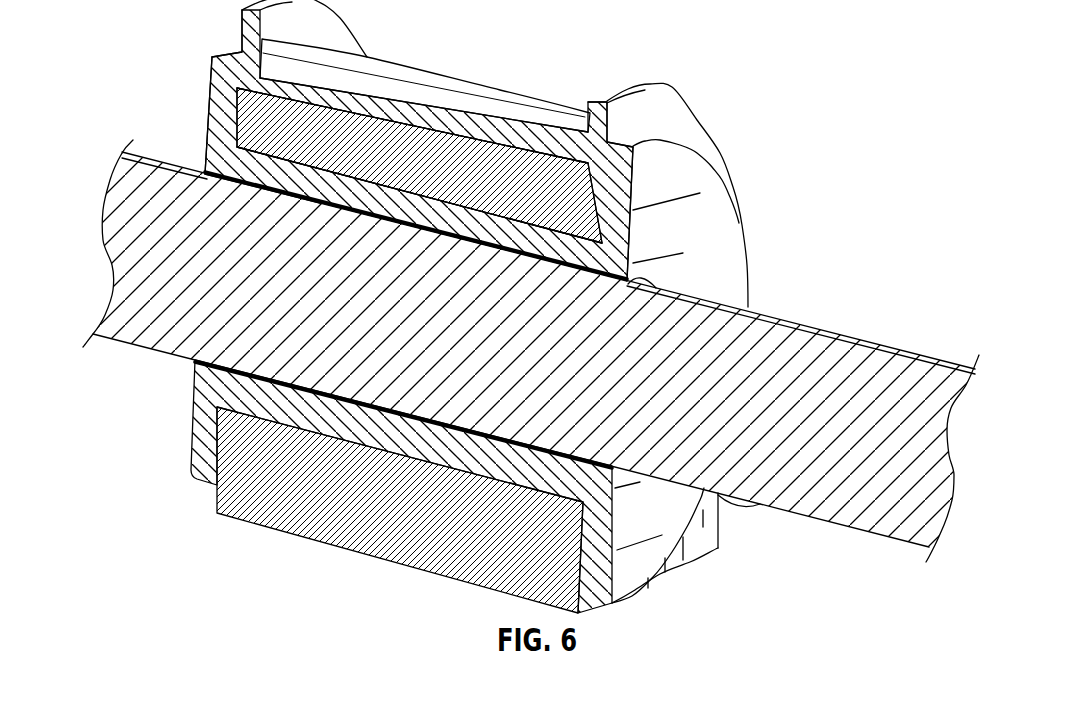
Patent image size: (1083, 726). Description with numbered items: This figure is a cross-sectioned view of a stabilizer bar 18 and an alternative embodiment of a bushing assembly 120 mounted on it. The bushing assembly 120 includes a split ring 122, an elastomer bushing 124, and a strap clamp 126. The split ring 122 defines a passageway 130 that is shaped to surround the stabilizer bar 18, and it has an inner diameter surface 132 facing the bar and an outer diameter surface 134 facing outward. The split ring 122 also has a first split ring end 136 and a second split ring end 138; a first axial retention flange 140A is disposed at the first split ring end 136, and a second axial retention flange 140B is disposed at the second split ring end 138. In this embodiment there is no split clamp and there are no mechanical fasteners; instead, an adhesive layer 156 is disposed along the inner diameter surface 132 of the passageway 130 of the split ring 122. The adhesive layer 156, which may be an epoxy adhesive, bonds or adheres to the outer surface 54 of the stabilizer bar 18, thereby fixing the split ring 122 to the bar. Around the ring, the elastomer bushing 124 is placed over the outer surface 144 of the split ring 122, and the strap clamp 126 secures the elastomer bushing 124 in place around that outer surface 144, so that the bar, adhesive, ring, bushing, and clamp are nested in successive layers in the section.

The stabilizer bar 18 is at (808, 345).
The outer surface 54 is at (898, 347).
The bushing assembly 120 is at (514, 306).
The split ring 122 is at (485, 306).
The elastomer bushing 124 is at (722, 153).
The strap clamp 126 is at (450, 77).
The passageway 130 is at (232, 186).
The inner diameter surface 132 is at (270, 195).
The outer diameter surface 134 is at (431, 192).
The first split ring end 136 is at (677, 147).
The second split ring end 138 is at (212, 57).
The first axial retention flange 140A is at (732, 255).
The second axial retention flange 140B is at (212, 98).
The outer surface 144 is at (525, 143).
The adhesive layer 156 is at (546, 264).